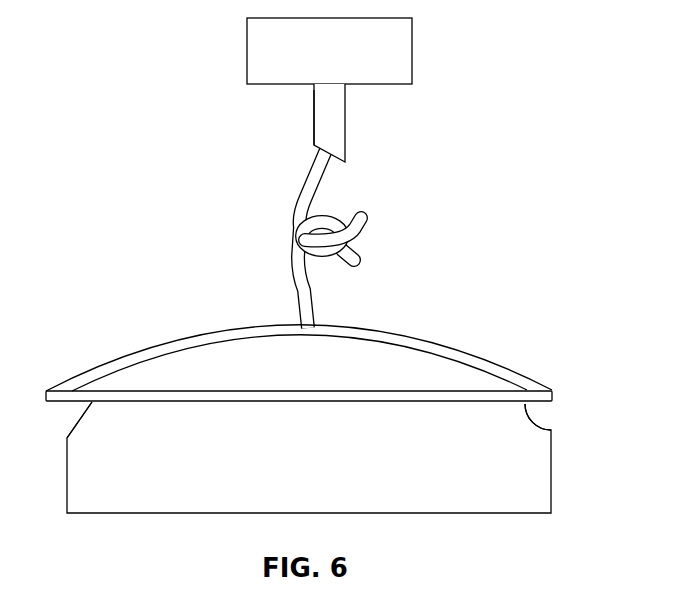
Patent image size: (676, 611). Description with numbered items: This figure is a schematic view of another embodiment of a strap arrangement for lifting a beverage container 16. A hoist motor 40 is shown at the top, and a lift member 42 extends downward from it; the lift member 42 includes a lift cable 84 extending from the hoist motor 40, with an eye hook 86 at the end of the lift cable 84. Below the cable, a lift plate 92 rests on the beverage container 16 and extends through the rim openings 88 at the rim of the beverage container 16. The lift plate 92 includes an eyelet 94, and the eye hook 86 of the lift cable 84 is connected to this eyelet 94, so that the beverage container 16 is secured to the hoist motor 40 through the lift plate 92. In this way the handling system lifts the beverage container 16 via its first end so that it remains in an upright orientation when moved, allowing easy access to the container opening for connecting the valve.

The beverage container 16 is at (296, 467).
The hoist motor 40 is at (317, 62).
The lift member 42 is at (347, 122).
The lift cable 84 is at (313, 115).
The eye hook 86 is at (298, 196).
The rim opening 88 is at (72, 430).
The lift plate 92 is at (447, 346).
The eyelet 94 is at (315, 303).